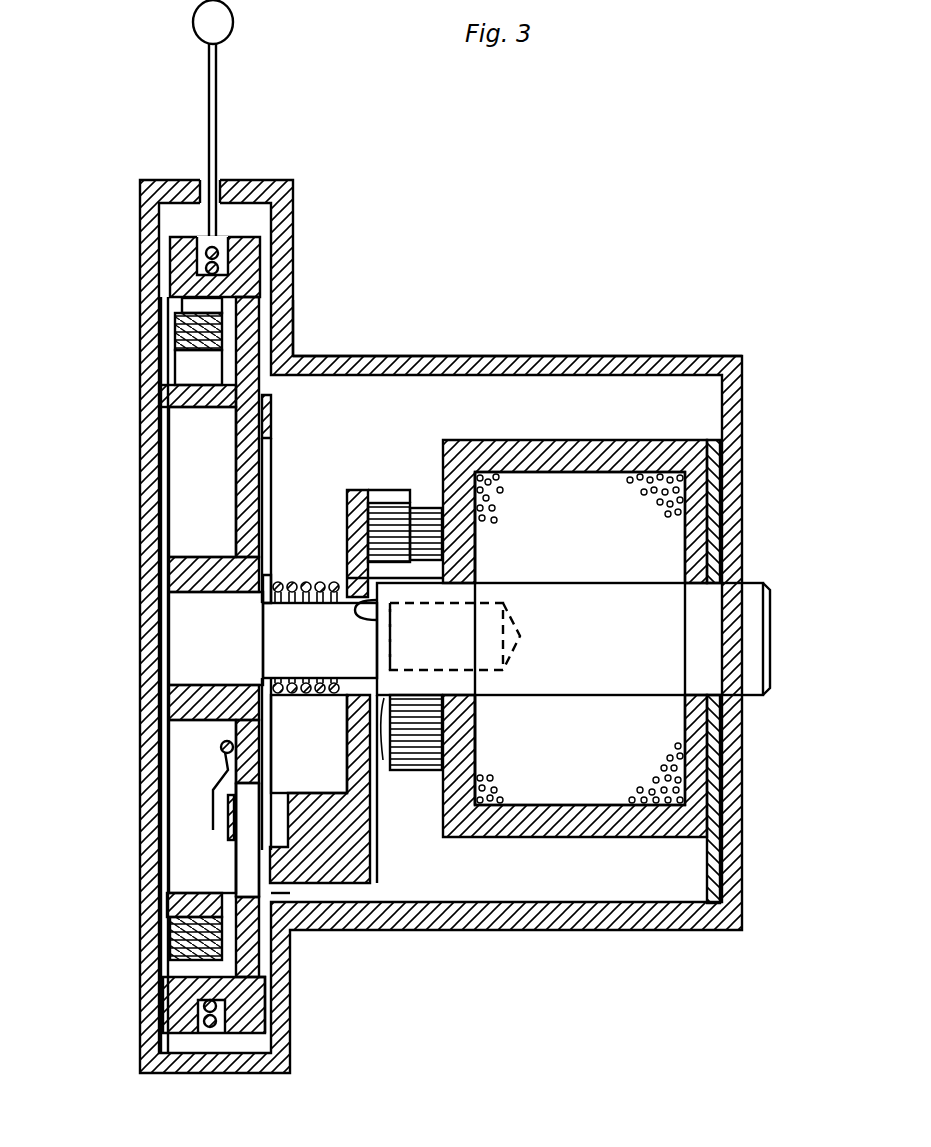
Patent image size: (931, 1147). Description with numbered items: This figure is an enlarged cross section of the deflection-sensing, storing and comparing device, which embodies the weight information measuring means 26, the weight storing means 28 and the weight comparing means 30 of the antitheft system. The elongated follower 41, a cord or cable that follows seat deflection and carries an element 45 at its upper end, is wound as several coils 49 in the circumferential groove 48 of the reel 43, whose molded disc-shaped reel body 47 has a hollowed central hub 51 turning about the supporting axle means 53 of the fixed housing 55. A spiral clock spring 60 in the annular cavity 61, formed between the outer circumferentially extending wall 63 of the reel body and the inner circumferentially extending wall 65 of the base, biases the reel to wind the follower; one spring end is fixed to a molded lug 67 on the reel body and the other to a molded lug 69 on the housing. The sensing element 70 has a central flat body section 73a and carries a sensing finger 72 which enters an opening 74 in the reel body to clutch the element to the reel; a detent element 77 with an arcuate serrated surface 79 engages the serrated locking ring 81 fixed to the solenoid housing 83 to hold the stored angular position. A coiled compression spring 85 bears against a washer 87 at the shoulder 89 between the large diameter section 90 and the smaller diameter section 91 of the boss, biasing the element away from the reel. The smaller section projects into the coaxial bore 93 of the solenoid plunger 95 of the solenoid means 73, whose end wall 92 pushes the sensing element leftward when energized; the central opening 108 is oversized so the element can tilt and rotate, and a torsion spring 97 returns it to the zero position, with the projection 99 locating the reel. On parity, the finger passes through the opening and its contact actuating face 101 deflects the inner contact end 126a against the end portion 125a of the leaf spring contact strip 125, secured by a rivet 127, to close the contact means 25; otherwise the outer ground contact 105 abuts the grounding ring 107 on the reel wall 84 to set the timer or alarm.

The open circuit switch means 25 is at (205, 808).
The weight information measuring means 26 is at (517, 316).
The weight storing means 28 is at (517, 316).
The weight comparing means 30 is at (455, 327).
The elongated follower 41 is at (216, 115).
The reel 43 is at (260, 330).
The knob 45 is at (231, 26).
The reel body 47 is at (240, 455).
The circumferential groove 48 is at (218, 255).
The coils 49 is at (205, 262).
The central hub 51 is at (205, 560).
The supporting axle means 53 is at (216, 638).
The fixed housing 55 is at (150, 692).
The spiral clock spring 60 is at (176, 366).
The annular cavity 61 is at (183, 305).
The outer circumferentially extending wall 63 is at (258, 298).
The inner circumferentially extending wall 65 is at (200, 398).
The molded lug 67 is at (176, 330).
The molded lug 69 is at (180, 900).
The sensing element 70 is at (372, 856).
The sensing finger 72 is at (318, 780).
The solenoid means 73 is at (712, 430).
The central flat body section 73a is at (386, 625).
The opening 74 is at (236, 876).
The detent element 77 is at (385, 503).
The arcuate serrated surface 79 is at (356, 490).
The serrated locking ring 81 is at (428, 505).
The solenoid housing 83 is at (600, 416).
The wall of the reel 84 is at (296, 340).
The coiled compression spring 85 is at (280, 580).
The washer 87 is at (266, 575).
The shoulder 89 is at (268, 608).
The large diameter section 90 is at (216, 638).
The smaller diameter section 91 is at (531, 639).
The end wall 92 is at (364, 600).
The coaxial bore 93 is at (500, 606).
The solenoid plunger 95 is at (628, 560).
The torsion spring 97 is at (384, 706).
The projection 99 is at (262, 1020).
The contact actuating face 101 is at (470, 560).
The outer ground contact 105 is at (294, 902).
The grounding ring 107 is at (270, 412).
The central opening 108 is at (364, 600).
The leaf spring contact strip 125 is at (225, 775).
The overlapping end portion 125a is at (226, 835).
The inner contact end 126a is at (236, 850).
The rivet 127 is at (220, 748).